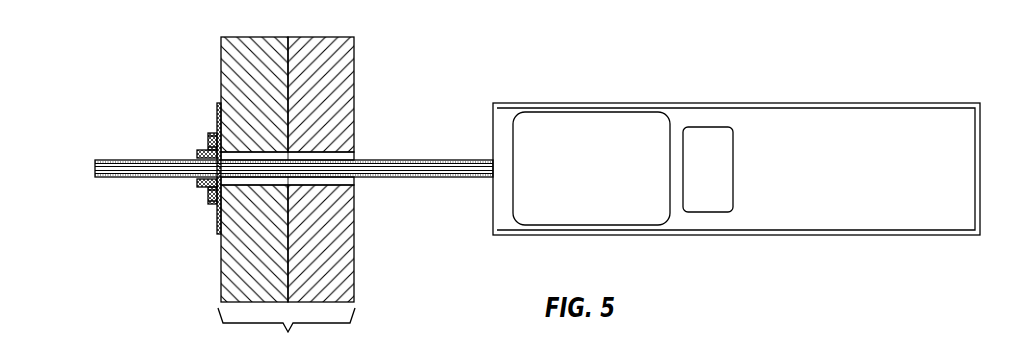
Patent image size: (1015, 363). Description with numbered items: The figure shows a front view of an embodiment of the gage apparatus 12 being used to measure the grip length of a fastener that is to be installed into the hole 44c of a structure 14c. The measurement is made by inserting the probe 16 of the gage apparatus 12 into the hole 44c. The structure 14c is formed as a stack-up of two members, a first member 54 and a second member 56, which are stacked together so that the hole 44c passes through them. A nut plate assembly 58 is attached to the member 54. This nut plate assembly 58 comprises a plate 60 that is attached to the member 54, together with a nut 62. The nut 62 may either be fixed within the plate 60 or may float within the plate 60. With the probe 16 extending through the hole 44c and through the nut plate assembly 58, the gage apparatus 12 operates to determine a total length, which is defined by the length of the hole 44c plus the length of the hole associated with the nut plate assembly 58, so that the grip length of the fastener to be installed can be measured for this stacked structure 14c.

The gage apparatus 12 is at (707, 102).
The probe 16 is at (143, 178).
The structure 14c is at (286, 331).
The hole 44c is at (342, 155).
The member 54 is at (237, 270).
The member 56 is at (340, 270).
The nut plate assembly 58 is at (210, 142).
The plate 60 is at (218, 112).
The nut 62 is at (207, 185).